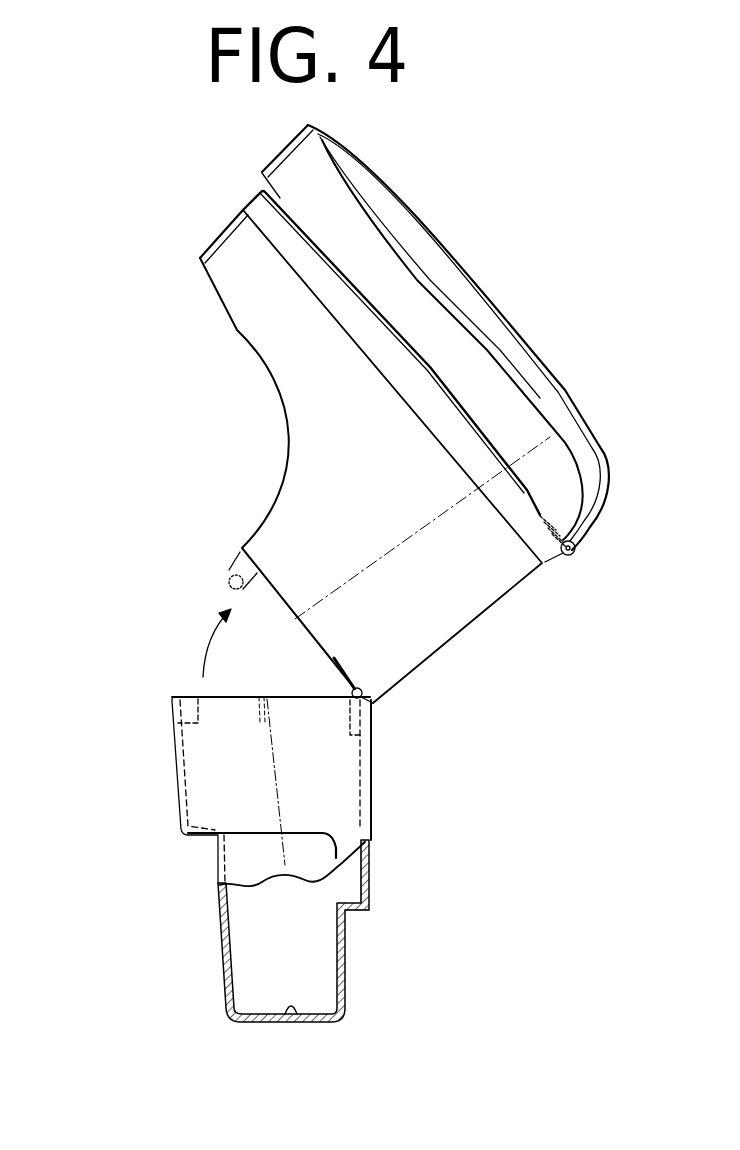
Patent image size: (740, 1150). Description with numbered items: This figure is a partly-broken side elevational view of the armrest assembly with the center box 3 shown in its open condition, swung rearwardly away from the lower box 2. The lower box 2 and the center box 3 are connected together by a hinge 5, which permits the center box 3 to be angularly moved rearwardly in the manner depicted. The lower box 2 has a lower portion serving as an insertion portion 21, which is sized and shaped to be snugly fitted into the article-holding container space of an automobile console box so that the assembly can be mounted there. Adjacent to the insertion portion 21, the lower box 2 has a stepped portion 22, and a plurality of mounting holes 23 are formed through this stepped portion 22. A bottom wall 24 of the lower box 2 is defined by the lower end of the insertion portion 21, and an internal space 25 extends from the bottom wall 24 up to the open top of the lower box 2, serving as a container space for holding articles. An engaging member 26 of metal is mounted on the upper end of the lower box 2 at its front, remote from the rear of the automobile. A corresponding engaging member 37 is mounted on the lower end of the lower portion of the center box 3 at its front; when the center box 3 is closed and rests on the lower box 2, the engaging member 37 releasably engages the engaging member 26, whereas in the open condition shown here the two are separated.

The lower box 2 is at (168, 768).
The center box 3 is at (490, 590).
The hinge 5 is at (350, 680).
The insertion portion 21 is at (347, 995).
The stepped portion 22 is at (367, 886).
The mounting holes 23 is at (352, 913).
The bottom wall 24 is at (286, 1017).
The internal space 25 is at (245, 945).
The engaging member 26 is at (194, 705).
The engaging member 37 is at (229, 577).